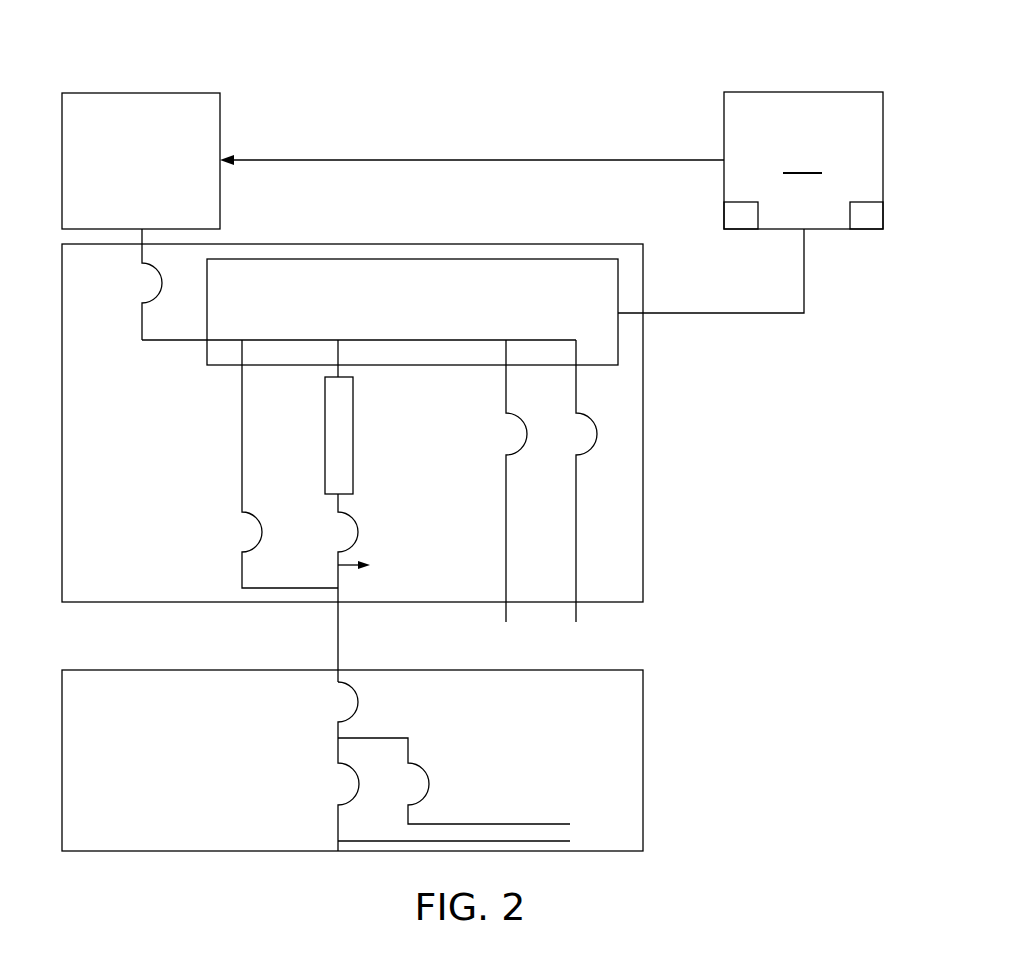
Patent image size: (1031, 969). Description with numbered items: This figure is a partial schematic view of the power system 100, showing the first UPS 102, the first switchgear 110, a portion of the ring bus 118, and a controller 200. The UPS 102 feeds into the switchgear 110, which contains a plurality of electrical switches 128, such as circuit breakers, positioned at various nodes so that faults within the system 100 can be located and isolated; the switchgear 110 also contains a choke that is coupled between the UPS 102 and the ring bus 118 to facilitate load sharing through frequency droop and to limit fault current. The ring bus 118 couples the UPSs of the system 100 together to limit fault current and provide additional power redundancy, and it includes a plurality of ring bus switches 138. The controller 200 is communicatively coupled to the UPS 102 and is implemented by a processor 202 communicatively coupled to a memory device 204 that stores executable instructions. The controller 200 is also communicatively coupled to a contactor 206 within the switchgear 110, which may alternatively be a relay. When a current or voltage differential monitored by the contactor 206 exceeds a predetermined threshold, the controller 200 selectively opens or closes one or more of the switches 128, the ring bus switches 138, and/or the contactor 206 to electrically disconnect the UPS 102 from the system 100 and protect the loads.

The system 100 is at (900, 76).
The first UPS 102 is at (220, 118).
The first switchgear 110 is at (643, 493).
The ring bus 118 is at (643, 785).
The electrical switches 128 is at (597, 432).
The ring bus switches 138 is at (428, 783).
The controller 200 is at (592, 202).
The processor 202 is at (737, 214).
The memory device 204 is at (868, 214).
The contactor 206 is at (392, 259).